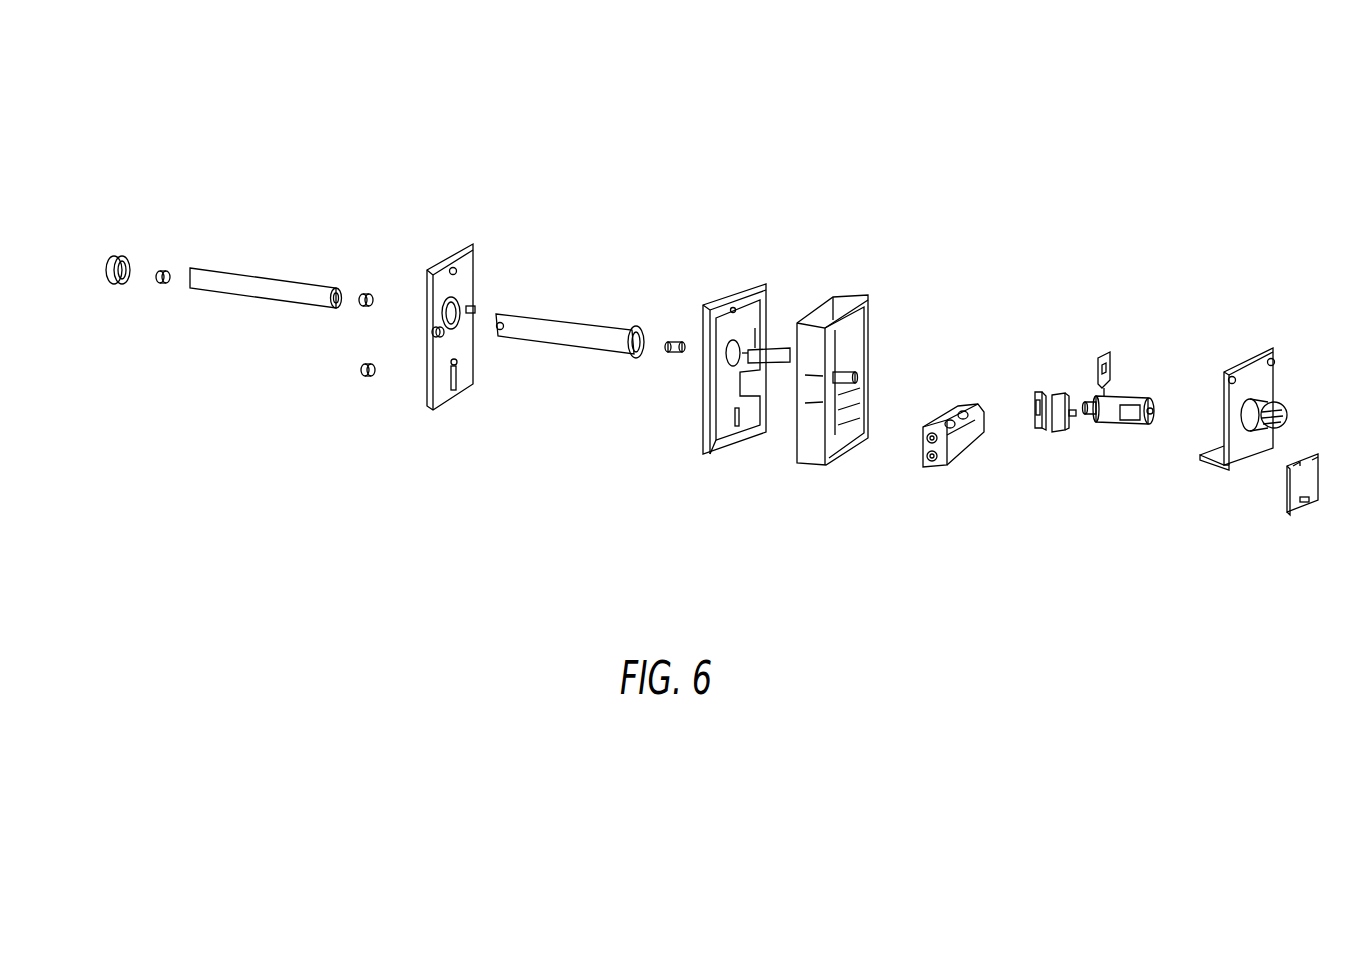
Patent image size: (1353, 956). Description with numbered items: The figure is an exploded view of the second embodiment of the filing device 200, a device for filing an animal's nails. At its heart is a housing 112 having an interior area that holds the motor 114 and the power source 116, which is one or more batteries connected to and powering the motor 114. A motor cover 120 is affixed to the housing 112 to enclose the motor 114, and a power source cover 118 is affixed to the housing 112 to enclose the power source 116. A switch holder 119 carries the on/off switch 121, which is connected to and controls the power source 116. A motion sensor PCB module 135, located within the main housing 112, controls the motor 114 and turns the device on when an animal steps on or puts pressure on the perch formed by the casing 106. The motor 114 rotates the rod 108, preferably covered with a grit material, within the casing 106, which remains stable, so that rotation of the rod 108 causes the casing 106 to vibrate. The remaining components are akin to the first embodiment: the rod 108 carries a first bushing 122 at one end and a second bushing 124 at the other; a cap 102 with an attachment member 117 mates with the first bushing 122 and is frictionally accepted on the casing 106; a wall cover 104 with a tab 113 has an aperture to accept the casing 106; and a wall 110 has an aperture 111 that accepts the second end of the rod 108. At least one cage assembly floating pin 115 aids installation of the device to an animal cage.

The filing device 200 is at (917, 135).
The cap 102 is at (121, 256).
The first bushing 122 is at (165, 270).
The rod 108 is at (270, 275).
The second bushing 124 is at (370, 292).
The cage assembly floating pin 115 is at (372, 363).
The wall cover 104 is at (474, 257).
The tab 113 is at (477, 314).
The casing 106 is at (546, 314).
The attachment member 117 is at (675, 340).
The wall 110 is at (708, 450).
The aperture 111 is at (772, 344).
The housing 112 is at (800, 450).
The power source 116 is at (920, 442).
The switch holder 119 is at (1036, 422).
The on/off switch 121 is at (1058, 430).
The motion sensor PCB module 135 is at (1098, 355).
The motor 114 is at (1108, 424).
The motor cover 120 is at (1215, 462).
The power source cover 118 is at (1300, 510).